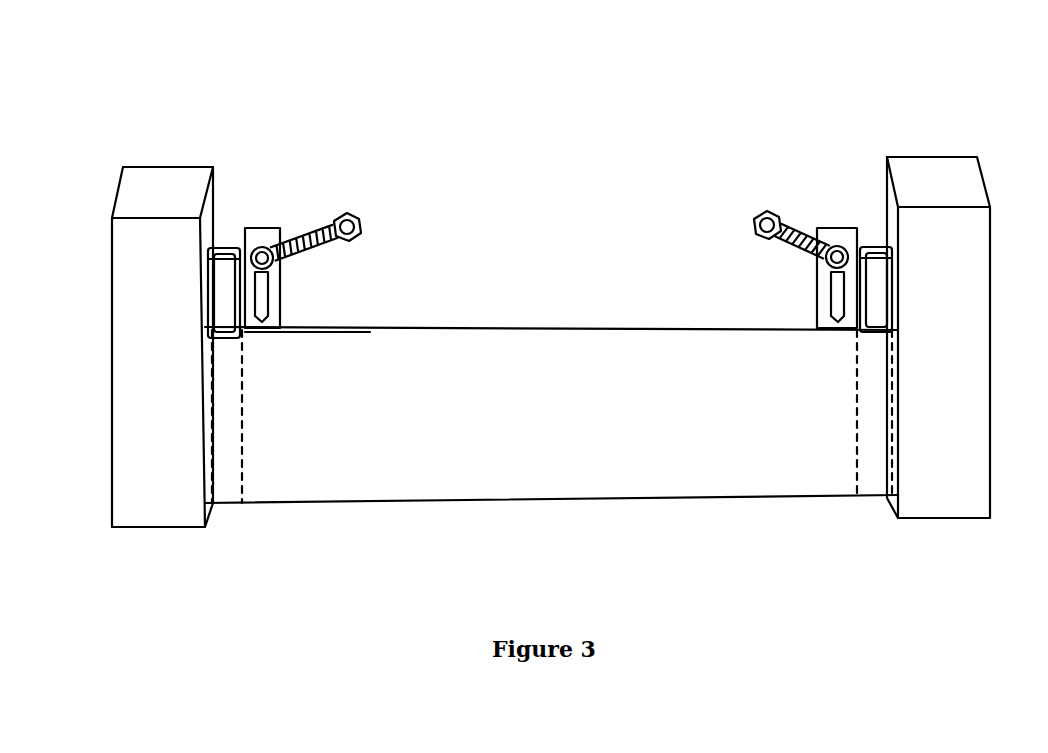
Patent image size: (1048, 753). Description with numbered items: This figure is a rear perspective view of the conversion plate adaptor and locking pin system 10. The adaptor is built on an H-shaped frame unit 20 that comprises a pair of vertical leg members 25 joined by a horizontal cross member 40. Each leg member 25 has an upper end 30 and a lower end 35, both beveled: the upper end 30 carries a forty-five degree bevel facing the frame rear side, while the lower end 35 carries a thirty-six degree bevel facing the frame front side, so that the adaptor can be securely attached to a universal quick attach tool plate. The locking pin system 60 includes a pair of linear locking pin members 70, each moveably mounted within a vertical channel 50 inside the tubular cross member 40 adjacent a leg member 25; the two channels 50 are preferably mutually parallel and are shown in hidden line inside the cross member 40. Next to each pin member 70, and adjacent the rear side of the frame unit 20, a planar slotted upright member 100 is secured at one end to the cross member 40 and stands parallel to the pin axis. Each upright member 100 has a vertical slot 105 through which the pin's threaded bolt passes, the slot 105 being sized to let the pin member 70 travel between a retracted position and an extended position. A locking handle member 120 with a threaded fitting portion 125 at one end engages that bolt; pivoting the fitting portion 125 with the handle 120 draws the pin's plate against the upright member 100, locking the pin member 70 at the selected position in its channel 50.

The conversion plate adaptor and locking pin system 10 is at (662, 58).
The H-shaped frame unit 20 is at (182, 607).
The vertical leg member 25 is at (128, 358).
The upper end 30 is at (137, 197).
The lower end 35 is at (147, 528).
The horizontal cross member 40 is at (533, 478).
The vertical channel 50 is at (242, 463).
The locking pin system 60 is at (571, 186).
The linear locking pin member 70 is at (224, 262).
The slotted upright member 100 is at (252, 223).
The vertical slot 105 is at (257, 303).
The locking handle member 120 is at (322, 253).
The threaded fitting portion 125 is at (273, 230).